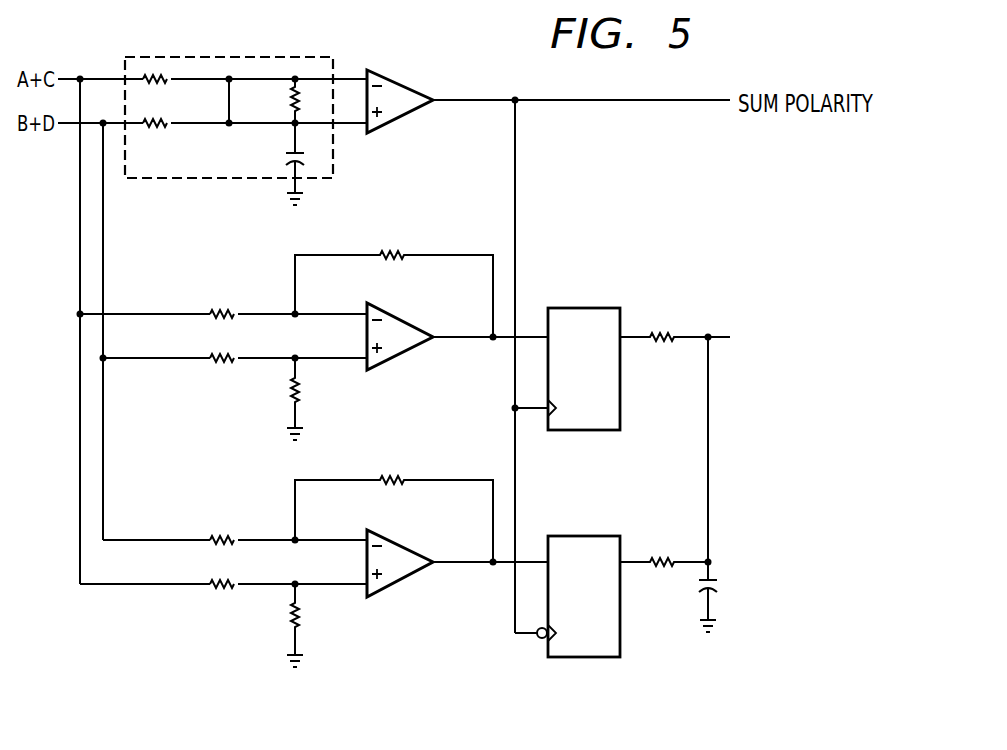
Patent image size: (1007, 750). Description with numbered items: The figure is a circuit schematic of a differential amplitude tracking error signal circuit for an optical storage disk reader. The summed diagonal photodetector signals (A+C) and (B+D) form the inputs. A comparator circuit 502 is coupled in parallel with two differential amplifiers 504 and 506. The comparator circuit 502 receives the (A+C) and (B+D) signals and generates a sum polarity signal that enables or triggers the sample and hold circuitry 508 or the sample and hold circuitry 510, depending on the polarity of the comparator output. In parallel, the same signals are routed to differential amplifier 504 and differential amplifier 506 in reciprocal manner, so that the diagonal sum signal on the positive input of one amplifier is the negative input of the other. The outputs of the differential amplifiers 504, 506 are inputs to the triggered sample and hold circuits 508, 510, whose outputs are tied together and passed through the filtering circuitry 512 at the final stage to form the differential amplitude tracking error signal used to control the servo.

The filtering circuitry 512 is at (232, 56).
The comparator circuit 502 is at (352, 143).
The differential amplifier 504 is at (403, 317).
The differential amplifier 506 is at (403, 542).
The sample and hold circuitry 508 is at (585, 307).
The sample and hold circuitry 510 is at (585, 535).